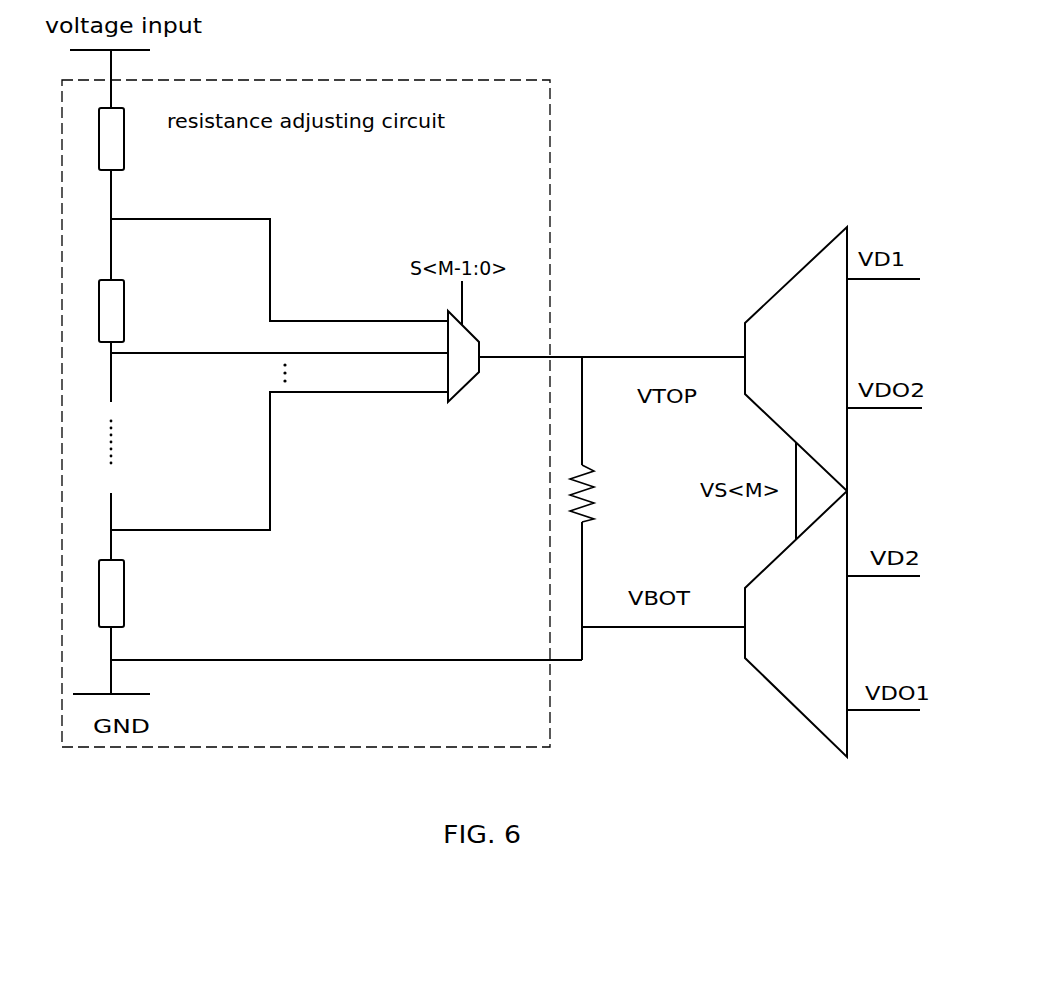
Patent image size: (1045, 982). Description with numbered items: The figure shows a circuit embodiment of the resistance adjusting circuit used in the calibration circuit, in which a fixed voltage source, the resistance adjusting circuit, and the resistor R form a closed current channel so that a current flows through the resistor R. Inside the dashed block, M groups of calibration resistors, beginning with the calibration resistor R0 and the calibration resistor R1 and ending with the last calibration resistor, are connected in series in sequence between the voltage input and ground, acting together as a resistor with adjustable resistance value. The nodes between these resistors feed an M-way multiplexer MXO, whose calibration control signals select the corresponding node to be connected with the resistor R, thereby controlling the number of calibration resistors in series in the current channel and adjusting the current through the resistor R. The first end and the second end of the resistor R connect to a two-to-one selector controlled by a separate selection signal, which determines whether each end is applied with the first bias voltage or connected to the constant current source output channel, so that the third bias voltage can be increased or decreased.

The calibration resistor R0 is at (132, 139).
The calibration resistor R1 is at (128, 311).
The resistor R is at (601, 508).
The M-way multiplexer MXO is at (489, 341).